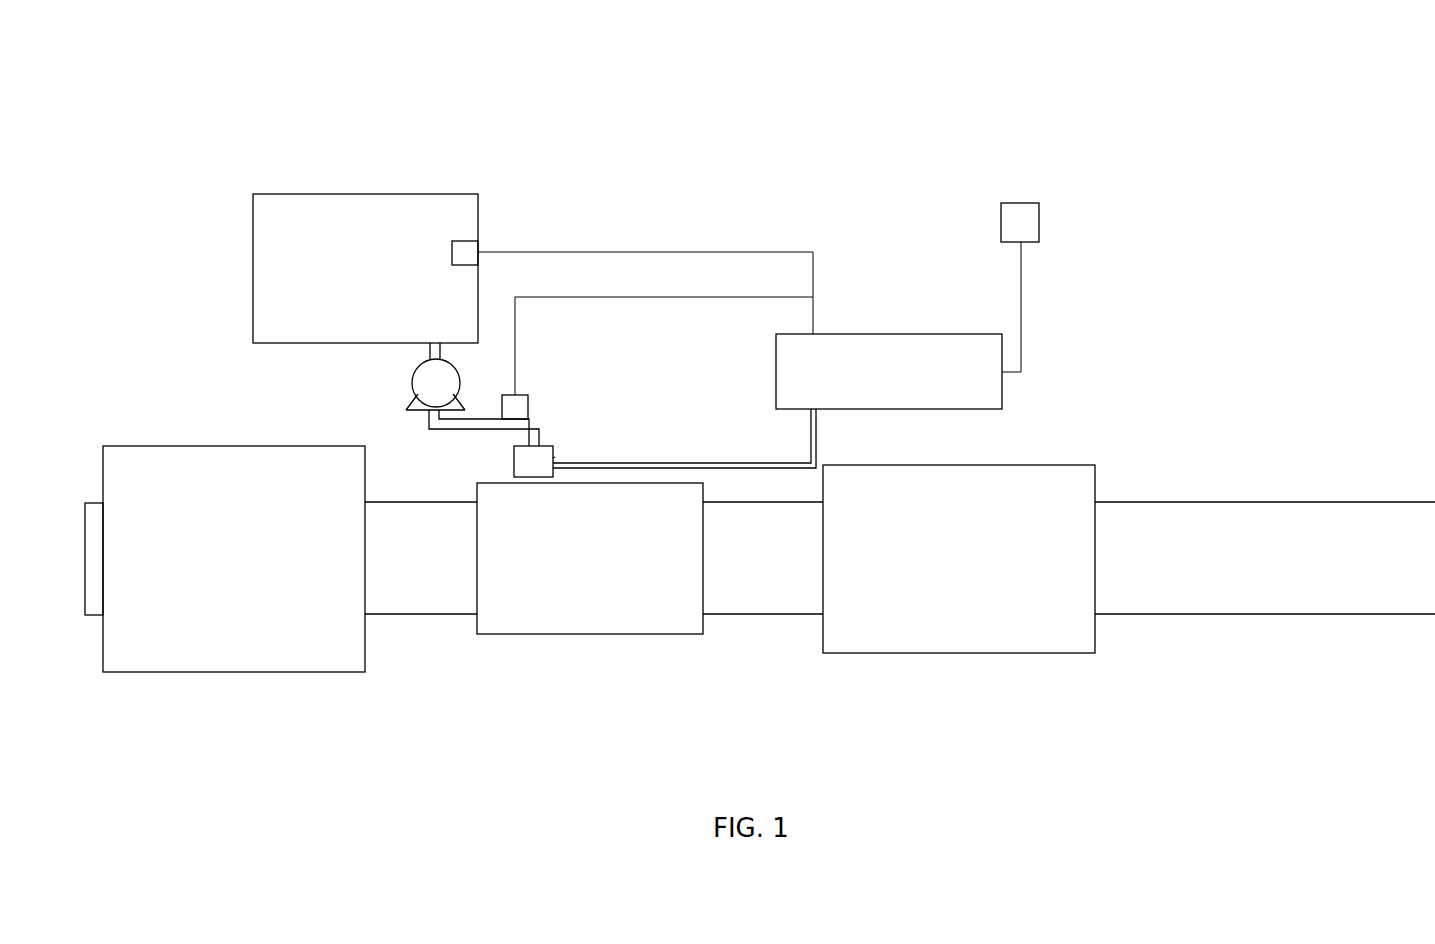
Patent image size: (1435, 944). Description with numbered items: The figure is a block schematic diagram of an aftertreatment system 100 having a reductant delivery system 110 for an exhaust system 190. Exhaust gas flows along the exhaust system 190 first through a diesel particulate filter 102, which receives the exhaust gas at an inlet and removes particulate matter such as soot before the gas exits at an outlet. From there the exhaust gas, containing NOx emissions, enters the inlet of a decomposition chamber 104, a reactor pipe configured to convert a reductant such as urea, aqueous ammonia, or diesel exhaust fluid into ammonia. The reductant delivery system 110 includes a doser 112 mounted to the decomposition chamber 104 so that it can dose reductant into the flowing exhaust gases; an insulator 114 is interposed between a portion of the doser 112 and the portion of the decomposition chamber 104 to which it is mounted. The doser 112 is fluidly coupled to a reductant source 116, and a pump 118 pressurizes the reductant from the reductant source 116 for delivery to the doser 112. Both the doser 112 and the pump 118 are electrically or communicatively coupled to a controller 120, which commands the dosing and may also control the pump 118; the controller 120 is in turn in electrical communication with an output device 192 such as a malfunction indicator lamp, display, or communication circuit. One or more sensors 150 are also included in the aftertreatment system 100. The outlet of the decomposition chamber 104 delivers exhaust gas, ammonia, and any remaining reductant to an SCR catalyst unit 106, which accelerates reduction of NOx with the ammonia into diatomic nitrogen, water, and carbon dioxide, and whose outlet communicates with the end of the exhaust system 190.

The aftertreatment system 100 is at (1348, 124).
The diesel particulate filter 102 is at (268, 672).
The decomposition chamber 104 is at (690, 483).
The SCR catalyst unit 106 is at (970, 653).
The reductant delivery system 110 is at (648, 391).
The doser 112 is at (555, 457).
The insulator 114 is at (514, 473).
The reductant source 116 is at (437, 194).
The pump 118 is at (412, 384).
The controller 120 is at (868, 334).
The sensors 150 is at (487, 239).
The exhaust system 190 is at (470, 705).
The output device 192 is at (1020, 203).